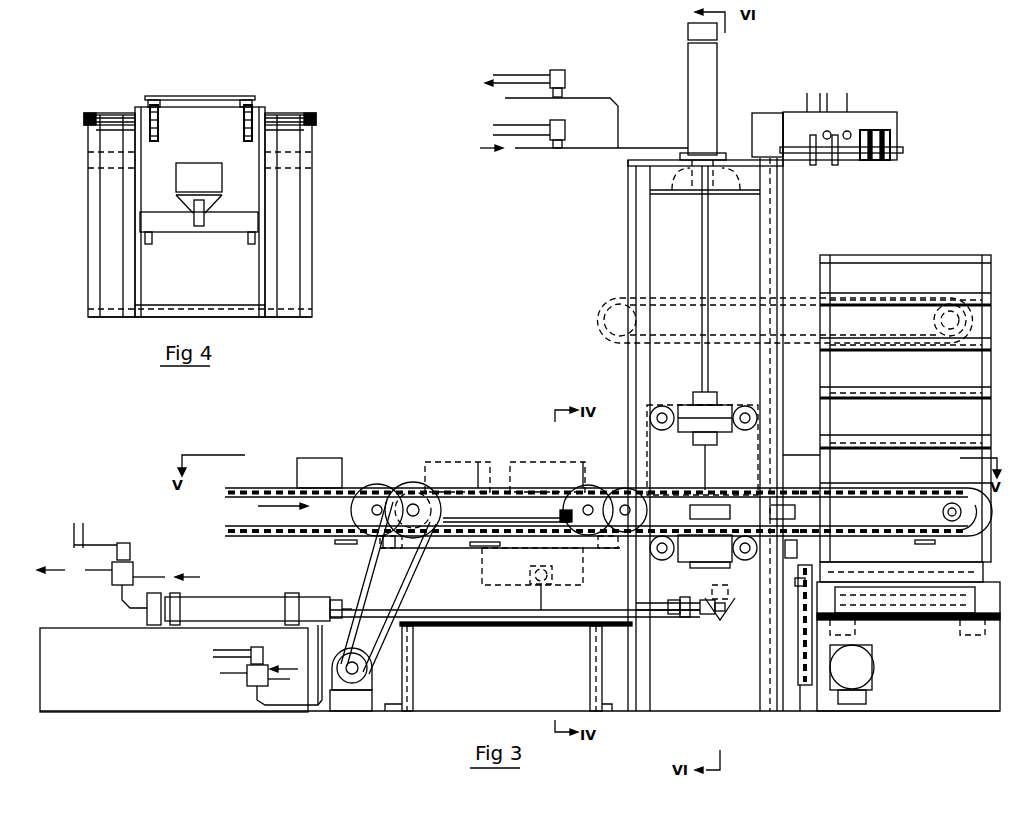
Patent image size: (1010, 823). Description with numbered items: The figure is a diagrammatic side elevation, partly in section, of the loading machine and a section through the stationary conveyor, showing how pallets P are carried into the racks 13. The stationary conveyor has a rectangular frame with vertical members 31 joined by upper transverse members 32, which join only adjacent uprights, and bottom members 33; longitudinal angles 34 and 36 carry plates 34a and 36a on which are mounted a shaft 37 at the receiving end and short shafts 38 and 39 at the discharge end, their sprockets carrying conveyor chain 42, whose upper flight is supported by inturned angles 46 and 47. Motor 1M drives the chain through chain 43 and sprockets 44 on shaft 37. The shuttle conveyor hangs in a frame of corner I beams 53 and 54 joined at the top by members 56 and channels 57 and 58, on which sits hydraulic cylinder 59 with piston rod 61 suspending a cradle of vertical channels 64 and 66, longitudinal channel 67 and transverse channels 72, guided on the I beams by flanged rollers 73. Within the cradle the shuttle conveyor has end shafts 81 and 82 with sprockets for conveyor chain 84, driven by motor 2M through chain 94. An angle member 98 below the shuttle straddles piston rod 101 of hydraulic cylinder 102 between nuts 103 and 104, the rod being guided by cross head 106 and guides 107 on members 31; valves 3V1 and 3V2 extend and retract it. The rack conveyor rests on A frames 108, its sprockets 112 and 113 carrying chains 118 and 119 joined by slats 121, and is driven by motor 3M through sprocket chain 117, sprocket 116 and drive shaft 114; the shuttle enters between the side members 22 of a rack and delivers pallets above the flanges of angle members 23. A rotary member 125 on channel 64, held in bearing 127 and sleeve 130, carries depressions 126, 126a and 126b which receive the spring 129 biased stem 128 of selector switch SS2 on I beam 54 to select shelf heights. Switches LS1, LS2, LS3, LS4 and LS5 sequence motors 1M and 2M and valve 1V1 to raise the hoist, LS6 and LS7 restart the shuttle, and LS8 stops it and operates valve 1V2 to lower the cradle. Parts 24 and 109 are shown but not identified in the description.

In FIG. 4, the pallet P is at (203, 96).
In FIG. 3, the pallet P is at (322, 488).
In FIG. 3, the rack 13 is at (895, 260).
In FIG. 3, the side members 22 is at (833, 290).
In FIG. 3, the angle members 23 is at (878, 392).
In FIG. 3, the transfer conveyor 24 is at (898, 520).
In FIG. 4, the vertical members 31 is at (122, 205).
In FIG. 3, the vertical members 31 is at (413, 660).
In FIG. 4, the upper transverse frame members 32 is at (108, 168).
In FIG. 3, the upper transverse frame members 32 is at (383, 548).
In FIG. 4, the bottom frame members 33 is at (170, 310).
In FIG. 3, the bottom frame members 33 is at (400, 706).
In FIG. 4, the angles 34 is at (120, 132).
In FIG. 4, the plate 34a is at (96, 122).
In FIG. 4, the angles 36 is at (290, 132).
In FIG. 3, the angles 36 is at (500, 560).
In FIG. 4, the plate 36a is at (305, 122).
In FIG. 3, the shaft 37 is at (413, 482).
In FIG. 4, the short shaft 38 is at (112, 113).
In FIG. 4, the short shaft 39 is at (292, 113).
In FIG. 3, the short shaft 39 is at (582, 462).
In FIG. 3, the conveyor chain 42 is at (517, 488).
In FIG. 3, the chain 43 is at (400, 555).
In FIG. 3, the sprockets 44 is at (380, 490).
In FIG. 4, the angle 46 is at (160, 112).
In FIG. 3, the angle 46 is at (478, 462).
In FIG. 4, the angle 47 is at (242, 112).
In FIG. 3, the I beam 53 is at (628, 232).
In FIG. 3, the I beam 54 is at (760, 238).
In FIG. 3, the horizontal structural members 56 is at (660, 175).
In FIG. 3, the channel 57 is at (676, 194).
In FIG. 3, the channel 58 is at (732, 194).
In FIG. 3, the hydraulic cylinder 59 is at (717, 85).
In FIG. 3, the piston rod 61 is at (709, 276).
In FIG. 3, the vertical channel member 64 is at (680, 450).
In FIG. 3, the vertical channel member 66 is at (740, 470).
In FIG. 3, the longitudinal channel member 67 is at (688, 405).
In FIG. 3, the transverse channel members 72 is at (724, 405).
In FIG. 3, the flanged rollers 73 is at (655, 406).
In FIG. 3, the transverse shaft 81 is at (600, 500).
In FIG. 3, the transverse shaft 82 is at (950, 485).
In FIG. 3, the conveyor chain 84 is at (806, 490).
In FIG. 3, the chain 94 is at (710, 512).
In FIG. 3, the angle member 98 is at (700, 612).
In FIG. 4, the piston rod 101 is at (210, 210).
In FIG. 3, the piston rod 101 is at (520, 618).
In FIG. 3, the hydraulic cylinder 102 is at (222, 597).
In FIG. 3, the nut 103 is at (676, 615).
In FIG. 3, the nut 104 is at (710, 615).
In FIG. 4, the cross head 106 is at (205, 230).
In FIG. 3, the cross head 106 is at (684, 618).
In FIG. 4, the guides 107 is at (148, 244).
In FIG. 3, the guides 107 is at (485, 627).
In FIG. 3, the A frame 108 is at (806, 700).
In FIG. 3, the drive housing 109 is at (1000, 676).
In FIG. 3, the sprocket 112 is at (858, 636).
In FIG. 3, the sprocket 113 is at (965, 636).
In FIG. 3, the drive shaft 114 is at (915, 613).
In FIG. 3, the sprocket 116 is at (795, 582).
In FIG. 3, the sprocket chain 117 is at (798, 655).
In FIG. 3, the conveyor chain 118 is at (878, 573).
In FIG. 3, the conveyor chain 119 is at (928, 573).
In FIG. 3, the slats 121 is at (850, 565).
In FIG. 3, the rotary member 125 is at (778, 112).
In FIG. 3, the depressions 126 is at (778, 222).
In FIG. 3, the upper depression 126a is at (762, 108).
In FIG. 3, the upper depression 126b is at (760, 135).
In FIG. 3, the bearing 127 is at (803, 547).
In FIG. 3, the stem 128 is at (903, 150).
In FIG. 3, the spring 129 is at (892, 133).
In FIG. 3, the encircling sleeve 130 is at (806, 95).
In FIG. 3, the motor 1M is at (352, 690).
In FIG. 3, the driving motor 2M is at (530, 572).
In FIG. 3, the motor 3M is at (872, 680).
In FIG. 3, the valve 1V1 is at (566, 130).
In FIG. 3, the magnetically operated valve 1V2 is at (566, 80).
In FIG. 3, the magnetic valve 3V1 is at (133, 570).
In FIG. 3, the magnetically operated valve 3V2 is at (252, 680).
In FIG. 3, the switch LS1 is at (342, 544).
In FIG. 3, the switch LS2 is at (478, 548).
In FIG. 3, the switch LS3 is at (558, 512).
In FIG. 3, the switch LS4 is at (698, 562).
In FIG. 3, the switch LS5 is at (793, 512).
In FIG. 3, the selector switch LS6 is at (825, 165).
In FIG. 3, the switch LS7 is at (848, 165).
In FIG. 3, the double throw switch LS8 is at (935, 544).
In FIG. 3, the selector switch SS2 is at (853, 112).